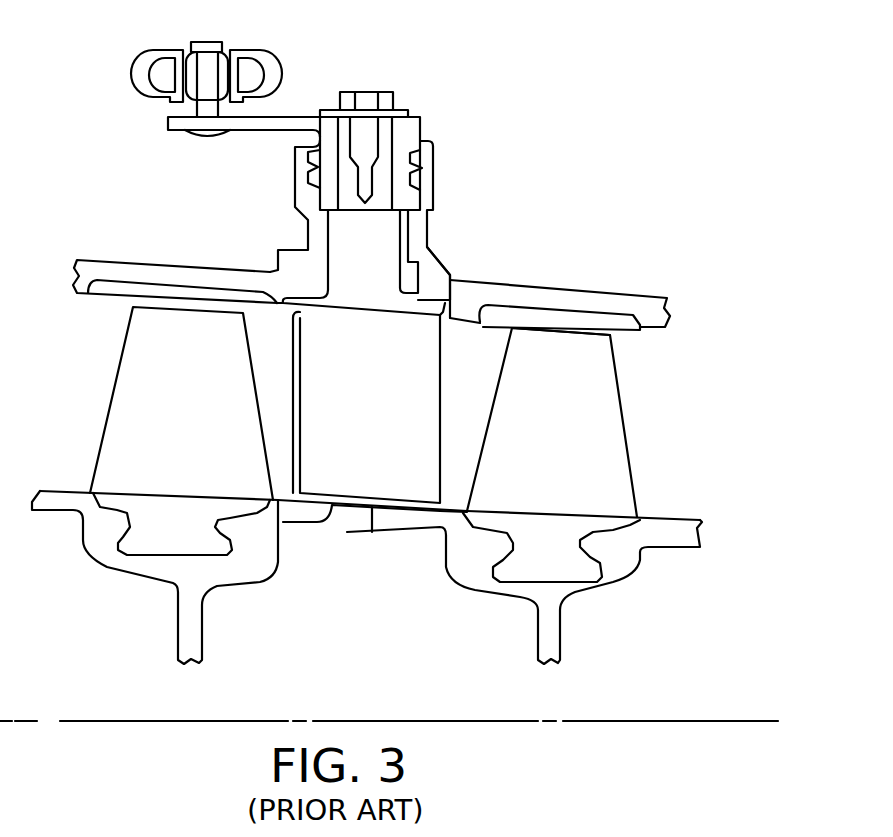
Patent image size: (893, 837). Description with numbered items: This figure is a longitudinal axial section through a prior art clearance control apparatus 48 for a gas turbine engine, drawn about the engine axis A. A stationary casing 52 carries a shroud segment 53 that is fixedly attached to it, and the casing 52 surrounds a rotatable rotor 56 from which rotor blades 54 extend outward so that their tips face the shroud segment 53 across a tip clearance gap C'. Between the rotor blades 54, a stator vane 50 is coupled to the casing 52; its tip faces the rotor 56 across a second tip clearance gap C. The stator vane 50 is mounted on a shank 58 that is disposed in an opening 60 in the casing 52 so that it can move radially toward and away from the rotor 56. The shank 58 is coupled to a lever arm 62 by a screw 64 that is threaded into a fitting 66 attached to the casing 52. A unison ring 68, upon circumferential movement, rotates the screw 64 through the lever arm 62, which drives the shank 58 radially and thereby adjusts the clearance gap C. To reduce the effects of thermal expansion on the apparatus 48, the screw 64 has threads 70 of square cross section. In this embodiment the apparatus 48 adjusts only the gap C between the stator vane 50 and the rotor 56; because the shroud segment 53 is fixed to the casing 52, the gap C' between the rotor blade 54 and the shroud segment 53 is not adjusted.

The clearance control apparatus 48 is at (525, 93).
The stator vane 50 is at (376, 399).
The stationary casing 52 is at (573, 293).
The shroud segment 53 is at (633, 320).
The rotor blade 54 is at (192, 399).
The rotor 56 is at (205, 583).
The shank 58 is at (381, 254).
The opening 60 is at (453, 283).
The lever arm 62 is at (280, 117).
The screw 64 is at (370, 146).
The fitting 66 is at (420, 192).
The unison ring 68 is at (240, 53).
The threads 70 is at (310, 182).
The tip clearance gap c is at (375, 530).
The tip clearance gap c' is at (594, 345).
The axis of rotation A is at (647, 721).